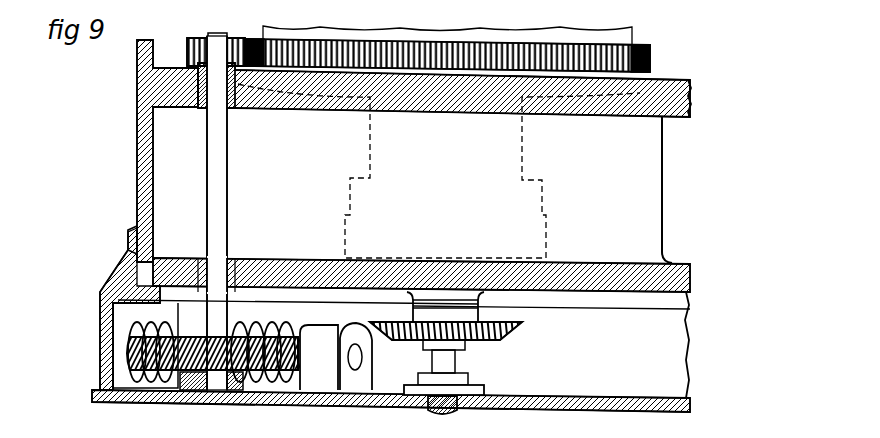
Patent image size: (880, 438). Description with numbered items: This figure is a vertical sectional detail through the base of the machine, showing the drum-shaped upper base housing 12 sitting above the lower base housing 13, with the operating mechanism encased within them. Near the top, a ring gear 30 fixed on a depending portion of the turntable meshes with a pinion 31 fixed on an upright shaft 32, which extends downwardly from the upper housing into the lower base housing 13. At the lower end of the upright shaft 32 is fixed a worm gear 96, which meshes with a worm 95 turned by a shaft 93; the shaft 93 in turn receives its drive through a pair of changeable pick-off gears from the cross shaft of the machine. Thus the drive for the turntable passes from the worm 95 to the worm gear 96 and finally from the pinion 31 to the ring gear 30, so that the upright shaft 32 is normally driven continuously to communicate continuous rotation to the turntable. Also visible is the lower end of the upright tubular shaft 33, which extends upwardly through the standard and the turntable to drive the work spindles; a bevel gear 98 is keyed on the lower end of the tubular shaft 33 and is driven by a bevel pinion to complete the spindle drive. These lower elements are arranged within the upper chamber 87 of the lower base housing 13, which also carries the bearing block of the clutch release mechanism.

The upper base housing 12 is at (145, 176).
The lower base housing 13 is at (105, 337).
The ring gear 30 is at (652, 56).
The pinion 31 is at (210, 46).
The upright shaft 32 is at (218, 208).
The tubular shaft 33 is at (452, 367).
The upper chamber 87 is at (600, 395).
The shaft 93 is at (362, 355).
The worm 95 is at (275, 338).
The worm gear 96 is at (170, 340).
The bevel gear 98 is at (520, 330).